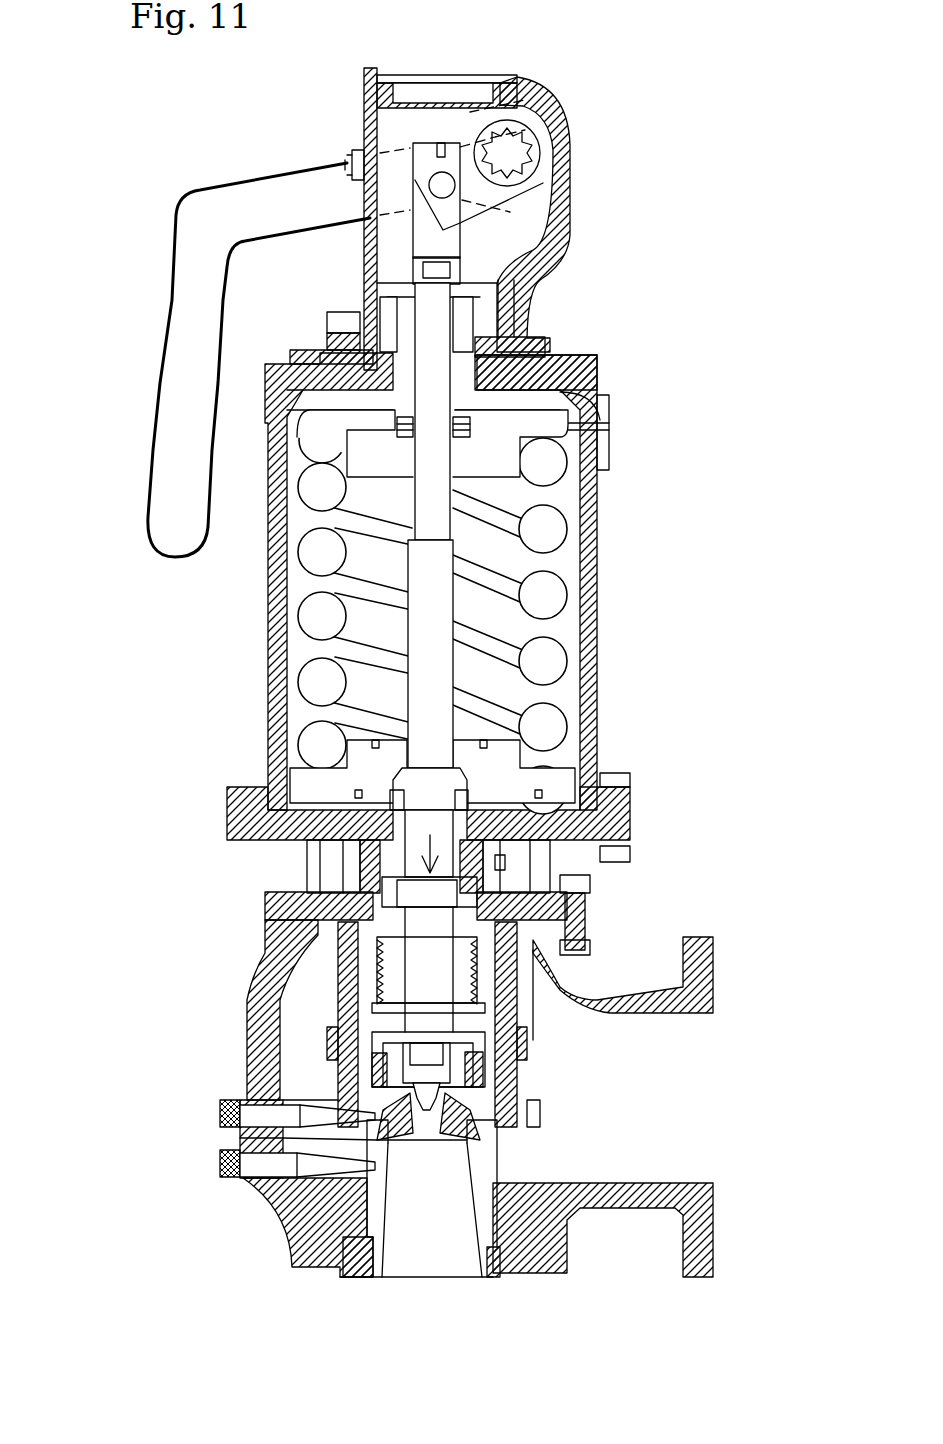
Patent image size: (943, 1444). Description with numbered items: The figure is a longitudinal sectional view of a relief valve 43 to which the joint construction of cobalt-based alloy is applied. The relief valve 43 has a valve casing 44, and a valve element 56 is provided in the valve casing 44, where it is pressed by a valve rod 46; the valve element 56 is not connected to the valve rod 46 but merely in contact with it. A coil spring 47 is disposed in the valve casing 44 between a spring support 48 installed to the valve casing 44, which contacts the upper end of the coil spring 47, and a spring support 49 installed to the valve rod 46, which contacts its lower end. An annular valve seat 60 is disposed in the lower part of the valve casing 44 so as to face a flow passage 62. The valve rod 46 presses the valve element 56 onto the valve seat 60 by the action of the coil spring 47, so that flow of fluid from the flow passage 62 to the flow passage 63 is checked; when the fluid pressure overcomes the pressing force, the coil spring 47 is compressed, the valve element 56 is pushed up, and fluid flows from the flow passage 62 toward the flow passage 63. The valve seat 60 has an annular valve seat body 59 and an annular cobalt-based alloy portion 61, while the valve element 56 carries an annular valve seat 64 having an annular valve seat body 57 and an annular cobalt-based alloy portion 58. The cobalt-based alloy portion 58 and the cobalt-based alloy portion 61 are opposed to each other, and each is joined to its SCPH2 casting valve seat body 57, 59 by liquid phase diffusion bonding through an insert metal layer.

The relief valve 43 is at (640, 715).
The valve casing 44 is at (268, 952).
The valve rod 46 is at (445, 627).
The coil spring 47 is at (556, 597).
The spring support 48 is at (530, 428).
The spring support 49 is at (302, 777).
The valve element 56 is at (377, 1103).
The valve seat body 57 is at (490, 1160).
The cobalt-based alloy portion 58 is at (463, 1130).
The valve seat body 59 is at (373, 1217).
The valve seat 60 is at (477, 1200).
The cobalt-based alloy portion 61 is at (237, 1140).
The flow passage 62 is at (387, 1277).
The flow passage 63 is at (655, 1075).
The valve seat 64 is at (290, 1220).